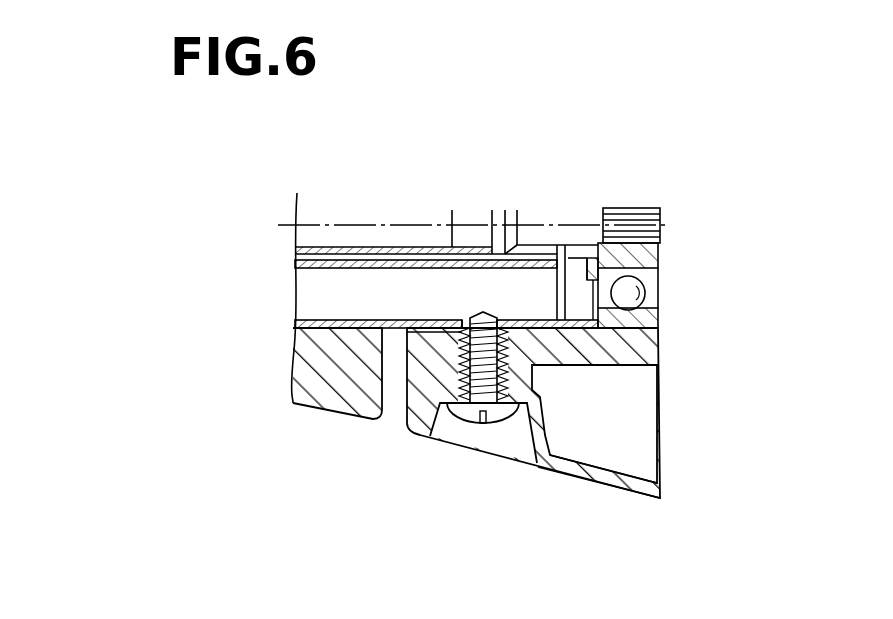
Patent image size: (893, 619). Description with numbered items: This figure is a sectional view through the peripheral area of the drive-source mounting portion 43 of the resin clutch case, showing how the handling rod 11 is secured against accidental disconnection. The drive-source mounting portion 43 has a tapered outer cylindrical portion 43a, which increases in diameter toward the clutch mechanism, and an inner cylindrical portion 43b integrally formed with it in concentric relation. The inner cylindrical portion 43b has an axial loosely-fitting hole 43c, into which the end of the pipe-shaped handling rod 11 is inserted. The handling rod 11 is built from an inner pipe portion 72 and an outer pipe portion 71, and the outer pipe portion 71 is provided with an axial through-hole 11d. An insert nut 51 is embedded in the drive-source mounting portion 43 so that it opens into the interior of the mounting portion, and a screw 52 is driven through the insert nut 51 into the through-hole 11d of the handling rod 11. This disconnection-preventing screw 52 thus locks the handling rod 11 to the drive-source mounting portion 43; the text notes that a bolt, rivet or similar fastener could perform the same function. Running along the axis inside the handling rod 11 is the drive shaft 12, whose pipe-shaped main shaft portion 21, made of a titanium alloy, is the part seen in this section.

The handling rod 11 is at (359, 296).
The axial through-hole 11d is at (462, 325).
The drive shaft 12 is at (476, 203).
The pipe-shaped main shaft portion 21 is at (312, 248).
The drive-source mounting portion 43 is at (632, 497).
The tapered outer cylindrical portion 43a is at (600, 478).
The inner cylindrical portion 43b is at (633, 354).
The axial loosely-fitting hole 43c is at (422, 331).
The insert nut 51 is at (437, 400).
The screw 52 is at (495, 422).
The outer pipe portion 71 is at (315, 321).
The inner pipe portion 72 is at (317, 268).